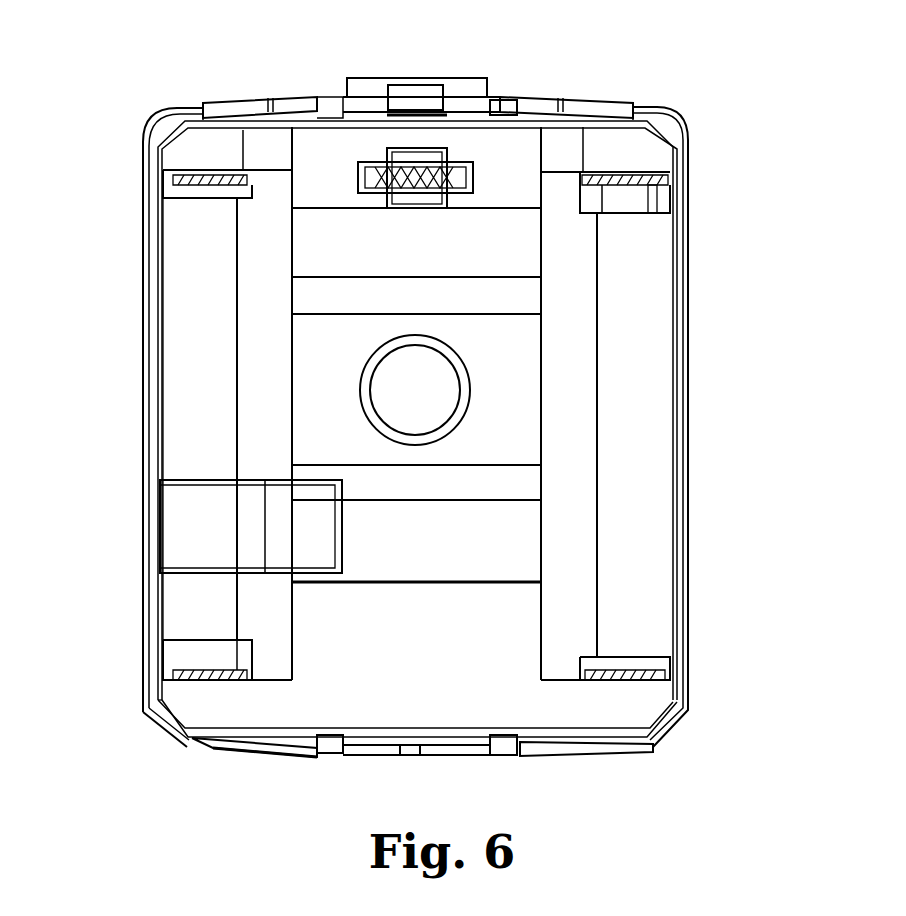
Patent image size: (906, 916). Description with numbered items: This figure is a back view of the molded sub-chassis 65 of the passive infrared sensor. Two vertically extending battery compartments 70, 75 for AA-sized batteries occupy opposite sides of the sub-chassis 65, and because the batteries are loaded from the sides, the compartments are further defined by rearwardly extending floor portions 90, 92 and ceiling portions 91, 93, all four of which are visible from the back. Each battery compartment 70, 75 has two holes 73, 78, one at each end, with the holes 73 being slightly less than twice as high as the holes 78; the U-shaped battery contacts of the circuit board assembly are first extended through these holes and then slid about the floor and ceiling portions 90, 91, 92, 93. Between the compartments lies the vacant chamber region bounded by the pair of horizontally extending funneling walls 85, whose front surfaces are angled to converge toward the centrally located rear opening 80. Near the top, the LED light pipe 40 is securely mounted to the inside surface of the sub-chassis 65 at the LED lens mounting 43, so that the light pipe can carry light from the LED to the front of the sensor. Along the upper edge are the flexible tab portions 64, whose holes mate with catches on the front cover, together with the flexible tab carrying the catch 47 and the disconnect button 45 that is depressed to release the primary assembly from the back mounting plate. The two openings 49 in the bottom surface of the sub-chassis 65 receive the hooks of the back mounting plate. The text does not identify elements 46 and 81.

The LED light pipe 40 is at (362, 165).
The LED lens mounting 43 is at (460, 163).
The disconnect button 45 is at (357, 78).
The bottom plate 46 is at (413, 757).
The catch 47 is at (428, 90).
The openings 49 is at (240, 753).
The flexible tab portions 64 is at (240, 98).
The sub-chassis 65 is at (516, 78).
The battery compartment 70 is at (173, 440).
The holes 73 is at (627, 197).
The battery compartment 75 is at (650, 575).
The holes 78 is at (188, 190).
The rear opening 80 is at (452, 412).
The box member 81 is at (192, 537).
The horizontally extending funneling walls 85 is at (313, 290).
The floor portion 90 is at (152, 714).
The ceiling portion 91 is at (190, 178).
The floor portion 92 is at (600, 672).
The ceiling portion 93 is at (638, 172).